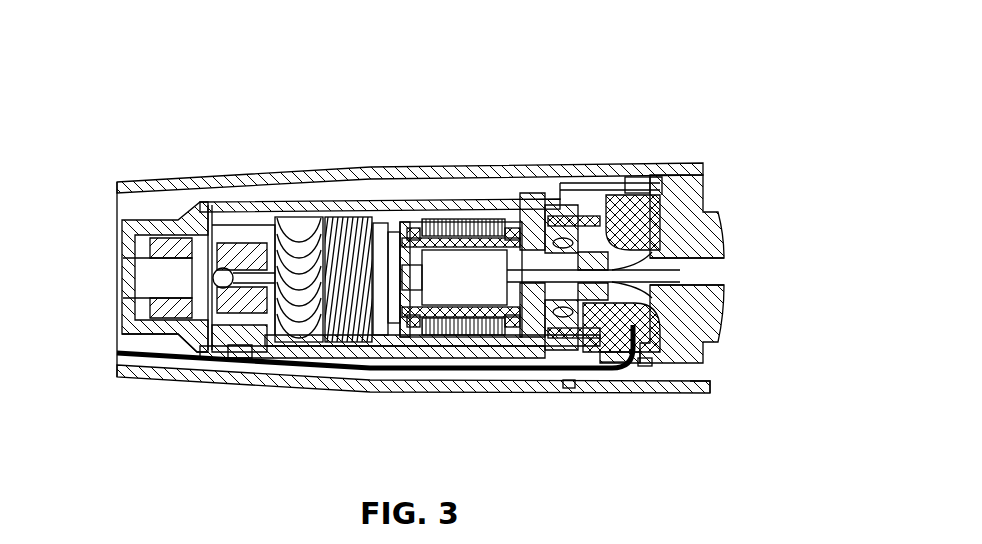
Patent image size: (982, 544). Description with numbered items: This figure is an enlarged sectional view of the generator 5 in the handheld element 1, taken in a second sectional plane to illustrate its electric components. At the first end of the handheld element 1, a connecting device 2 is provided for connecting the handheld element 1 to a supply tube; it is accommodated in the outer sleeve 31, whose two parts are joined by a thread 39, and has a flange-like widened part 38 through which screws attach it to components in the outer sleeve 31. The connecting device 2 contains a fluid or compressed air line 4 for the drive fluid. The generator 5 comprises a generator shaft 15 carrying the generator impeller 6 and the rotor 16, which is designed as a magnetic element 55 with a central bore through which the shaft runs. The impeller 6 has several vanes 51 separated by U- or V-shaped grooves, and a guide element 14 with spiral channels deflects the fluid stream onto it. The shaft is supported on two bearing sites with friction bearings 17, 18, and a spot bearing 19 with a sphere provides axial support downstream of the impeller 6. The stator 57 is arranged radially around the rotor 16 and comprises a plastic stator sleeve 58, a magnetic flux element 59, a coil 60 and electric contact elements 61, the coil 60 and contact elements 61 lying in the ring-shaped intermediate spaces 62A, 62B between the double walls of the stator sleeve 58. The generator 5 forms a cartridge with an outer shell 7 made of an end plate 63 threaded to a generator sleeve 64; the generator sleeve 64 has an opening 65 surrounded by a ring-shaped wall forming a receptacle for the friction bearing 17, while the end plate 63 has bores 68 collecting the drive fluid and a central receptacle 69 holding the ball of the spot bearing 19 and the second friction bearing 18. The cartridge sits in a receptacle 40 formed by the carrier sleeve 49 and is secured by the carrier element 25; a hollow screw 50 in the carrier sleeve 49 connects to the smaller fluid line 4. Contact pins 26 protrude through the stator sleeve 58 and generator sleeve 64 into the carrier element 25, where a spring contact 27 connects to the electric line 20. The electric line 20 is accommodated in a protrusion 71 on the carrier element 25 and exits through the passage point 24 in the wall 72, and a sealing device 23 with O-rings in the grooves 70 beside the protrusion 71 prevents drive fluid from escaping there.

The handheld element 1 is at (437, 75).
The connecting device 2 is at (710, 222).
The fluid or compressed air line 4 is at (125, 262).
The generator 5 is at (440, 200).
The generator impeller 6 is at (297, 334).
The outer shell 7 is at (477, 349).
The guide element 14 is at (348, 210).
The generator shaft 15 is at (262, 342).
The rotor 16 is at (490, 292).
The friction bearing 17 is at (600, 200).
The second friction bearing 18 is at (232, 268).
The spot bearing 19 is at (232, 252).
The electric line 20 is at (537, 370).
The sealing device 23 is at (632, 178).
The passage point 24 is at (665, 385).
The carrier element 25 is at (655, 222).
The contact pins 26 is at (562, 203).
The spring contact 27 is at (587, 214).
The outer sleeve 31 is at (142, 373).
The flange-like widened part 38 is at (677, 350).
The thread 39 is at (583, 386).
The receptacle 40 is at (215, 352).
The carrier sleeve 49 is at (150, 216).
The hollow screw 50 is at (180, 320).
The vanes 51 is at (303, 235).
The magnetic element 55 is at (443, 278).
The stator 57 is at (477, 210).
The stator sleeve 58 is at (402, 345).
The magnetic flux element 59 is at (497, 335).
The coil 60 is at (435, 327).
The electric contact elements 61 is at (543, 230).
The ring-shaped intermediate space 62A is at (407, 212).
The ring-shaped intermediate space 62B is at (517, 208).
The end plate 63 is at (240, 358).
The generator sleeve 64 is at (340, 343).
The opening 65 is at (580, 276).
The bores 68 is at (235, 284).
The receptacle 69 is at (215, 290).
The grooves 70 is at (632, 184).
The protrusion 71 is at (642, 368).
The wall 72 is at (610, 365).